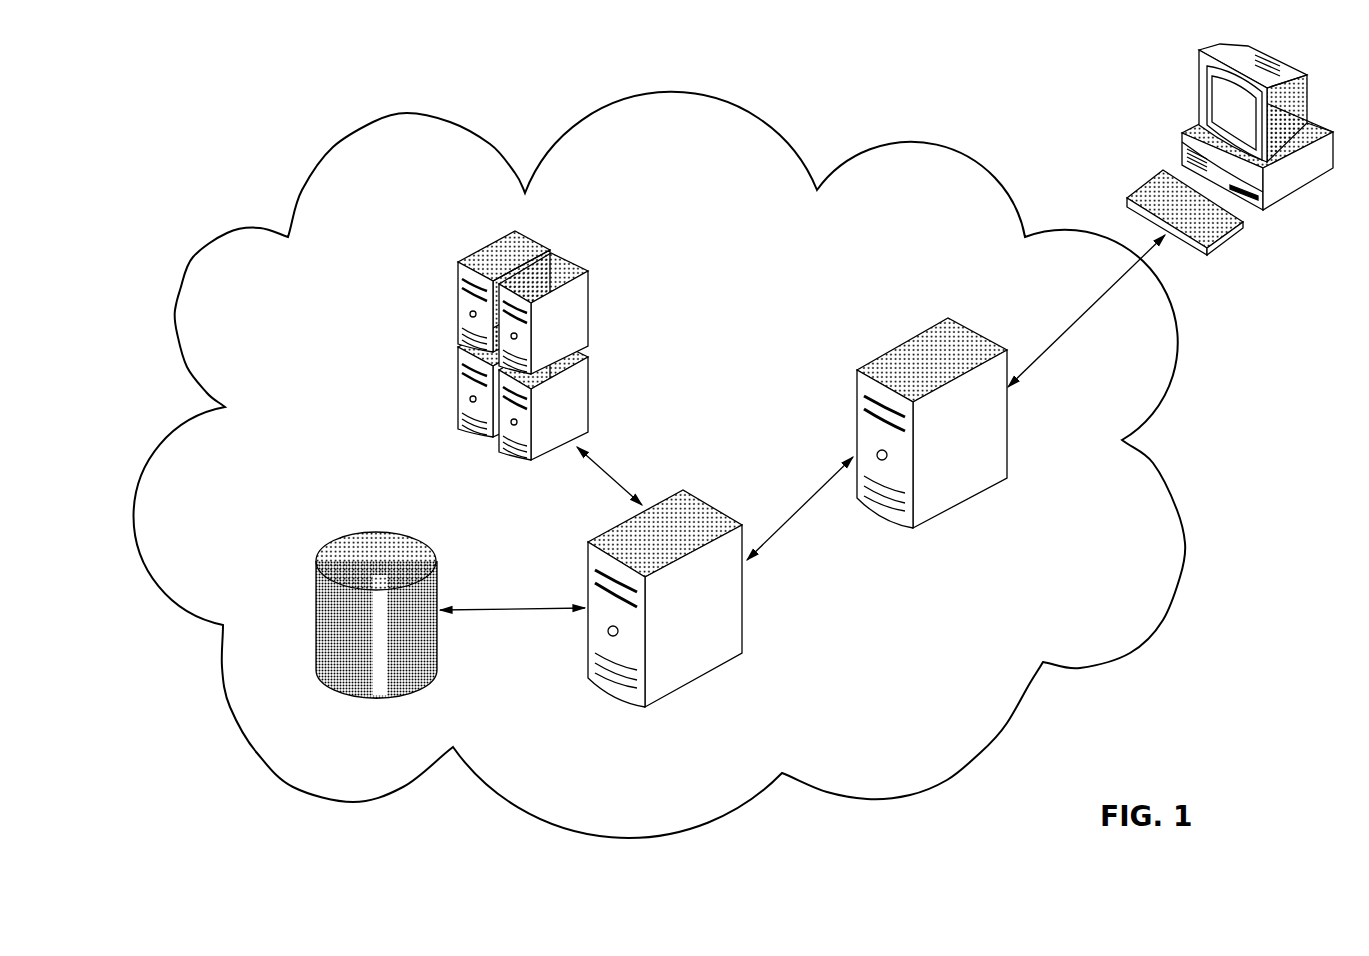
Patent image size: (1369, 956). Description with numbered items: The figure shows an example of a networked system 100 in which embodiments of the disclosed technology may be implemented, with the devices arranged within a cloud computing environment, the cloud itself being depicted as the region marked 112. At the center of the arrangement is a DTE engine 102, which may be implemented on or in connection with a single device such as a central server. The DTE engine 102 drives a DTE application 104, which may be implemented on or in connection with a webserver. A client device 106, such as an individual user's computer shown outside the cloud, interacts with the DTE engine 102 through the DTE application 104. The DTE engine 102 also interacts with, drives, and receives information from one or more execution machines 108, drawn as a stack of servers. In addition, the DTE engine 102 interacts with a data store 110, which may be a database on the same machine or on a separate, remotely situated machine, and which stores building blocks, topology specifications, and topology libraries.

The networked system 100 is at (157, 150).
The DTE engine 102 is at (605, 527).
The DTE application 104 is at (915, 332).
The client device 106 is at (1197, 122).
The execution machines 108 is at (483, 253).
The data store 110 is at (335, 533).
The network 112 is at (165, 433).